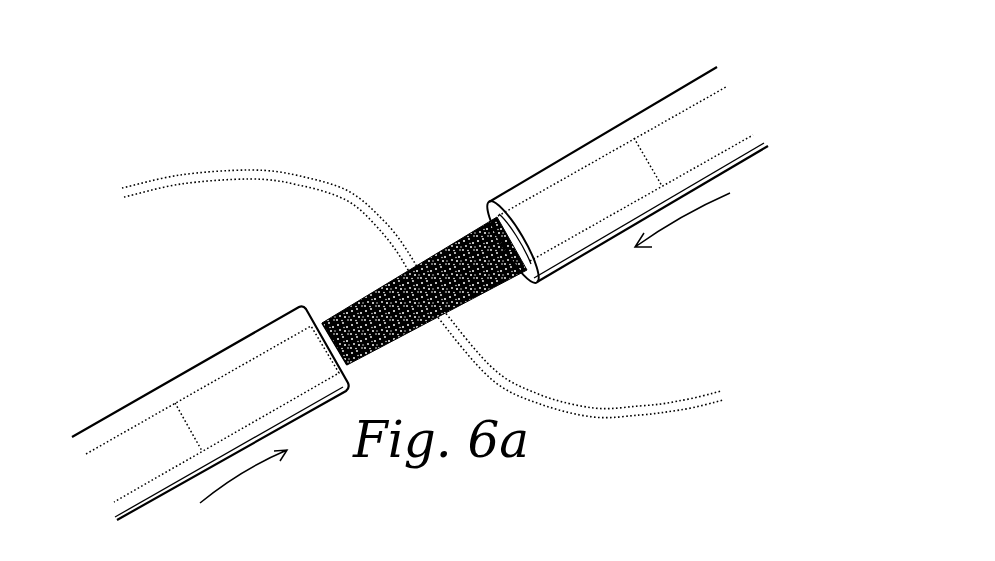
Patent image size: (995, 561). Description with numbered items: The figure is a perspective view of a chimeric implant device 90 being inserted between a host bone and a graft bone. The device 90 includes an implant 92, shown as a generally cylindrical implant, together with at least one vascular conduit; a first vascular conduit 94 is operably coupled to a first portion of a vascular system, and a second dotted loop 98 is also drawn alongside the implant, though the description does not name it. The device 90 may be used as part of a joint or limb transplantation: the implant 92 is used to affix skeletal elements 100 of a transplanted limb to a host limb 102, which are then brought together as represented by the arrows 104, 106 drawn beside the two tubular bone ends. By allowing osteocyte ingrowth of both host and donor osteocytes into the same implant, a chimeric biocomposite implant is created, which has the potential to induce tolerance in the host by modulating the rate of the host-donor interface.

The implant device 90 is at (421, 233).
The implant 92 is at (363, 297).
The first vascular conduit 94 is at (300, 172).
The second loop portion of tubing 98 is at (590, 400).
The skeletal elements 100 is at (130, 404).
The host limb 102 is at (645, 109).
The arrow 104 is at (235, 482).
The arrow 106 is at (693, 216).